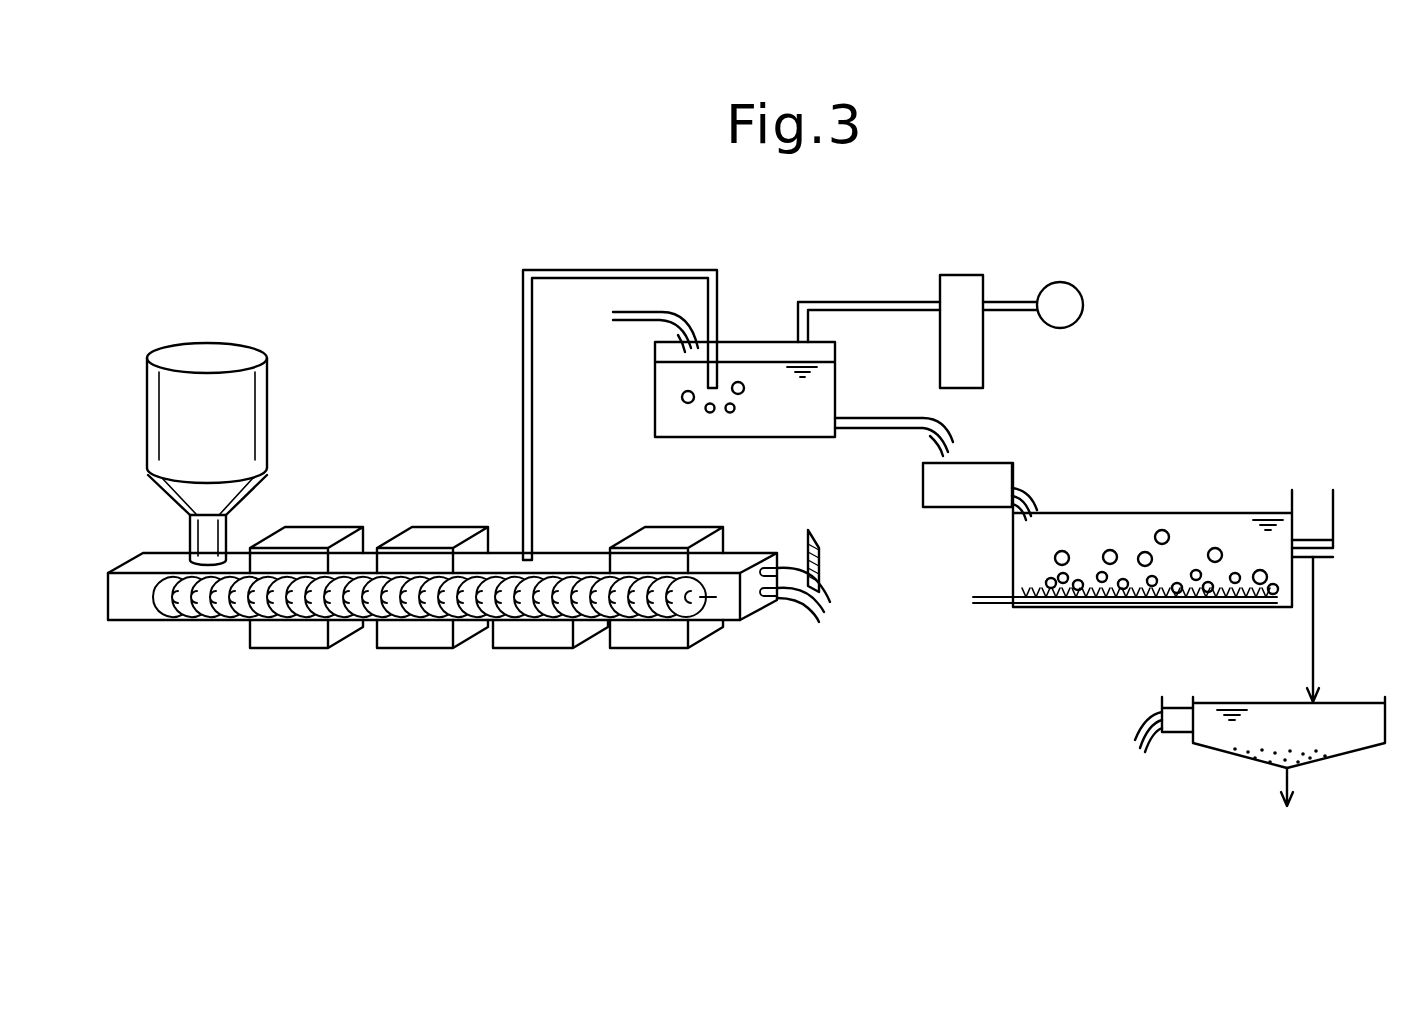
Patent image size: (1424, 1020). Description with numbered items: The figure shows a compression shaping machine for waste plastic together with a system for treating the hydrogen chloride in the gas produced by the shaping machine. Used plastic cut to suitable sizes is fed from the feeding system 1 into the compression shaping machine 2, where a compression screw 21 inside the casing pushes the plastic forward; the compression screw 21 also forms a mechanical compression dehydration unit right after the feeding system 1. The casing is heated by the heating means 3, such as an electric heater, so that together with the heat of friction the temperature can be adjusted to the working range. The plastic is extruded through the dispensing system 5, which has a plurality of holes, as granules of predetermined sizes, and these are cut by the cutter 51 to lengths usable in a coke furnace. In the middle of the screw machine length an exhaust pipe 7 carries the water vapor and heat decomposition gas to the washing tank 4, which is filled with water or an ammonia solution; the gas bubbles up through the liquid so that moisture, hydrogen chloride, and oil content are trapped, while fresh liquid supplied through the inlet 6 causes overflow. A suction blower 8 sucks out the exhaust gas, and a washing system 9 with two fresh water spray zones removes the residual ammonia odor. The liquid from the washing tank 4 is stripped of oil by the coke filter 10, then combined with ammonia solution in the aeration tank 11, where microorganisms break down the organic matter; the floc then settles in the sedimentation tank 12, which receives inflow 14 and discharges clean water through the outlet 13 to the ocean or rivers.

The feeding system 1 is at (253, 430).
The compression shaping machine 2 is at (123, 622).
The compression screw 21 is at (222, 607).
The heating means 3 is at (315, 533).
The washing tank 4 is at (655, 420).
The dispensing system 5 is at (790, 617).
The cutter 51 is at (820, 566).
The liquid inlet pipe 6 is at (643, 322).
The exhaust pipe 7 is at (523, 378).
The suction blower 8 is at (1060, 300).
The washing system 9 is at (945, 288).
The coke filter 10 is at (1002, 470).
The aeration tank 11 is at (1193, 520).
The sedimentation tank 12 is at (1370, 720).
The outlet 13 is at (1292, 781).
The water inlet 14 is at (1148, 720).